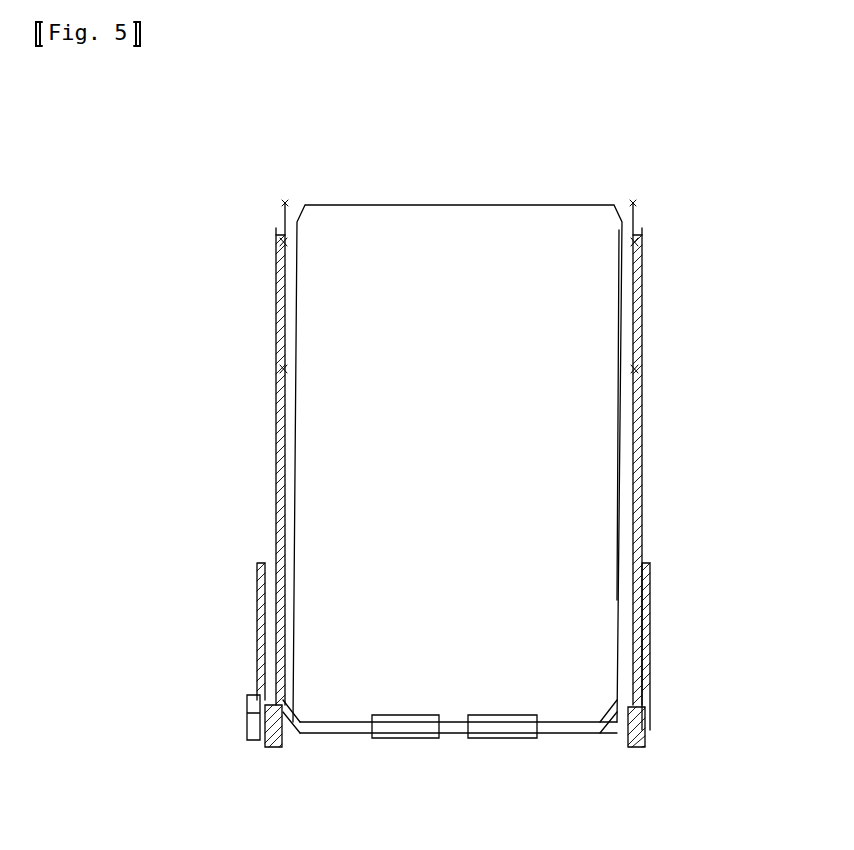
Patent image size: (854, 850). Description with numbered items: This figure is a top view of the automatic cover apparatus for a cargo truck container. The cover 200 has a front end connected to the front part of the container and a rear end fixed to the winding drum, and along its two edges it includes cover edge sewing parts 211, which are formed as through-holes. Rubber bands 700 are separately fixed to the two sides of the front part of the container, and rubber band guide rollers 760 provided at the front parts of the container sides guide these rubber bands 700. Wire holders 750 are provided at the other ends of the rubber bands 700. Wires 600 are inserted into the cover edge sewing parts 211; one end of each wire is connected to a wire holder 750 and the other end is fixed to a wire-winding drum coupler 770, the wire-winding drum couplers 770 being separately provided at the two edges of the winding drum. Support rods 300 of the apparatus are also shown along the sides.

The cover 200 is at (457, 463).
The cover edge sewing parts 211 is at (617, 480).
The support rods 300 is at (650, 630).
The wires 600 is at (634, 410).
The rubber bands 700 is at (634, 300).
The wire holders 750 is at (636, 370).
The rubber band guide rollers 760 is at (638, 245).
The wire-winding drum couplers 770 is at (633, 770).